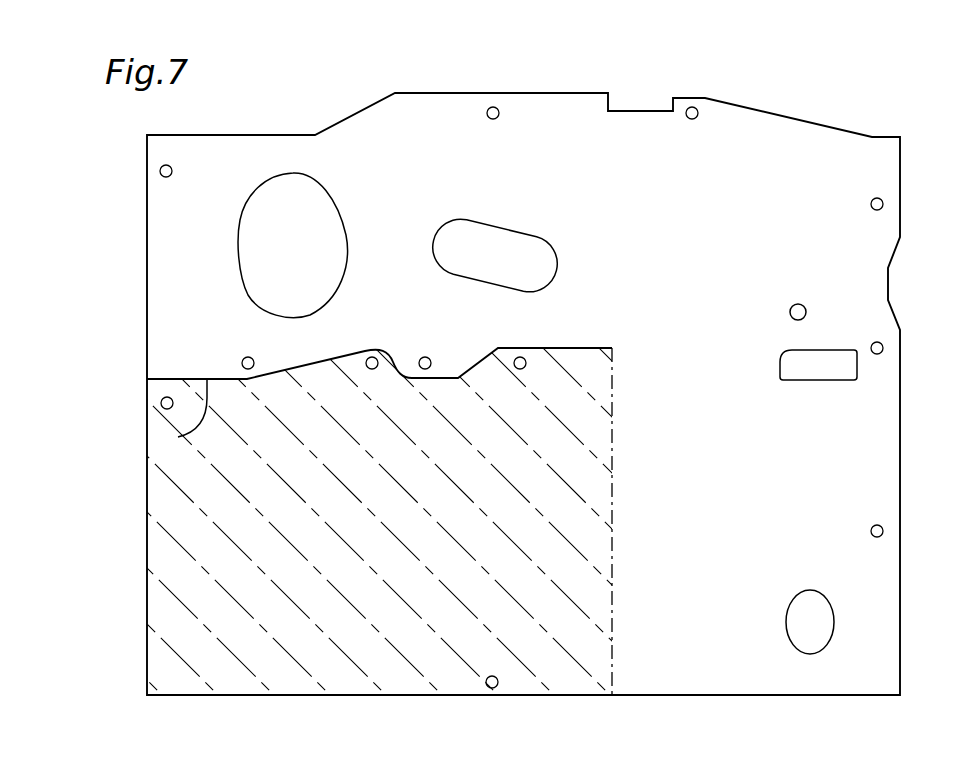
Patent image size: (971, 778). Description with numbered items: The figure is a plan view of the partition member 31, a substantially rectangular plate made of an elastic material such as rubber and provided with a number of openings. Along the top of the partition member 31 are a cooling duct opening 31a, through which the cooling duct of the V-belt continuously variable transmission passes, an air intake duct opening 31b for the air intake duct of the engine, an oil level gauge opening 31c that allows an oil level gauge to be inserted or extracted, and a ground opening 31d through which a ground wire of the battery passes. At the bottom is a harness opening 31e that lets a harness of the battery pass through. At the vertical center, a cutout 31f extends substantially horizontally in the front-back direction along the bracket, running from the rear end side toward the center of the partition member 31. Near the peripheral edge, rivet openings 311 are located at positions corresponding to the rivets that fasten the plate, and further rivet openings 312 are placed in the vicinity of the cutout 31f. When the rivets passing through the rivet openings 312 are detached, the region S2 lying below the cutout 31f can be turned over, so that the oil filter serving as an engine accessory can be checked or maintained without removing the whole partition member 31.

The partition member 31 is at (780, 128).
The rivet openings 311 is at (160, 171).
The rivet openings 312 is at (243, 360).
The cooling duct opening 31a is at (268, 183).
The air intake duct opening 31b is at (518, 238).
The oil level gauge opening 31c is at (806, 312).
The ground opening 31d is at (848, 367).
The harness opening 31e is at (822, 618).
The cutout 31f is at (178, 437).
The region below the cutout S2 is at (160, 625).